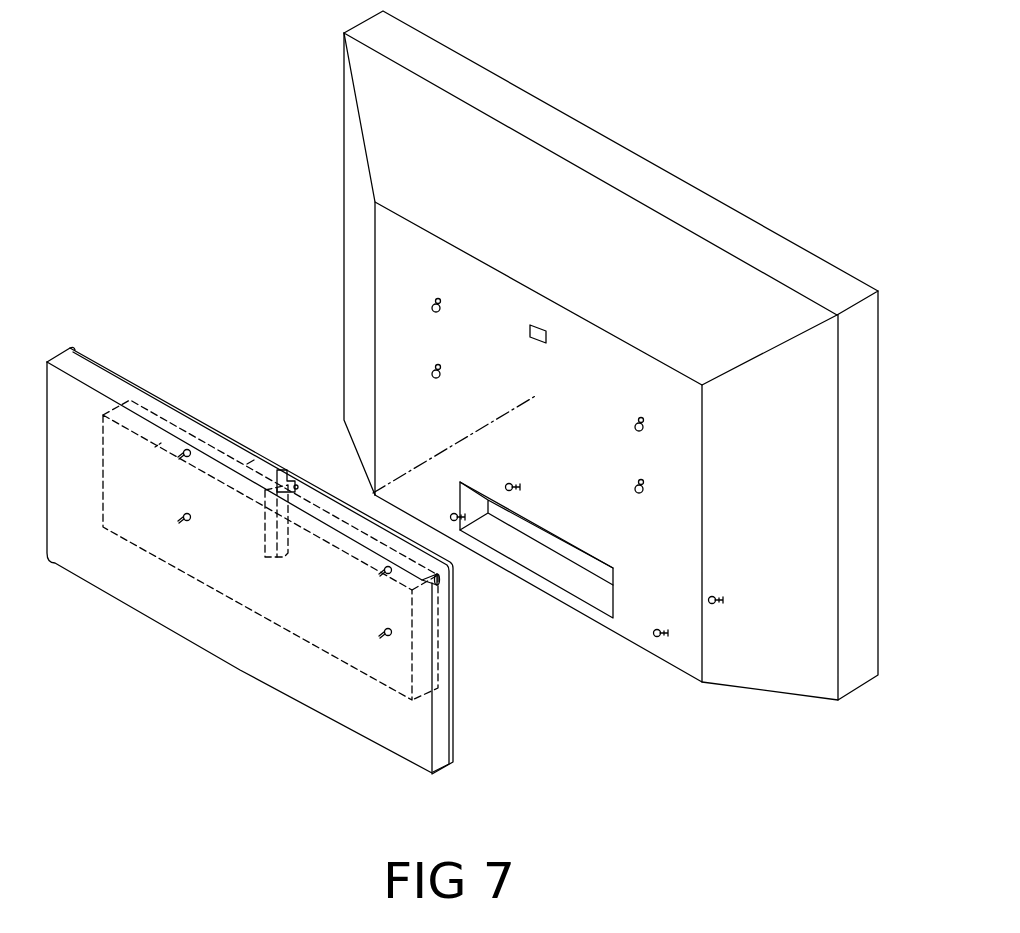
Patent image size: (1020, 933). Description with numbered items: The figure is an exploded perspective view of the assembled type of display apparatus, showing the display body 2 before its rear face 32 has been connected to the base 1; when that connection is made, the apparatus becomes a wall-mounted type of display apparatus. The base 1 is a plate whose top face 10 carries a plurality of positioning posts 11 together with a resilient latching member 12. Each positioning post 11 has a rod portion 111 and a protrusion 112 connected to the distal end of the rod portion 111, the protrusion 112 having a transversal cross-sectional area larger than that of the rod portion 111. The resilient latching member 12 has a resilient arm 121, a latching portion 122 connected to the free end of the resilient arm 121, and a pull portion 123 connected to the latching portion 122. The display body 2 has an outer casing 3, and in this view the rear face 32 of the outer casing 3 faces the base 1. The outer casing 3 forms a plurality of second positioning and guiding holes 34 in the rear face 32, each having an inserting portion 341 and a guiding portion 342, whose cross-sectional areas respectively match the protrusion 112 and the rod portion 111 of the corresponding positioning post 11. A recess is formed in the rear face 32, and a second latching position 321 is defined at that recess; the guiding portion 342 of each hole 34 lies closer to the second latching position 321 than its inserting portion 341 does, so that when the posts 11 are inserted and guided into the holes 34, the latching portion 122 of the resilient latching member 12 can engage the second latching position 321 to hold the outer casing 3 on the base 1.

The base 1 is at (287, 517).
The top face 10 is at (440, 632).
The positioning post 11 is at (146, 359).
The rod portion 111 is at (158, 445).
The protrusion 112 is at (190, 446).
The resilient latching member 12 is at (268, 443).
The resilient arm 121 is at (250, 463).
The latching portion 122 is at (278, 468).
The pull portion 123 is at (291, 472).
The display body 2 is at (555, 359).
The outer casing 3 is at (535, 370).
The rear face 32 is at (637, 620).
The second latching position 321 is at (548, 330).
The second positioning and guiding hole 34 is at (337, 281).
The inserting portion 341 is at (436, 312).
The guiding portion 342 is at (435, 307).